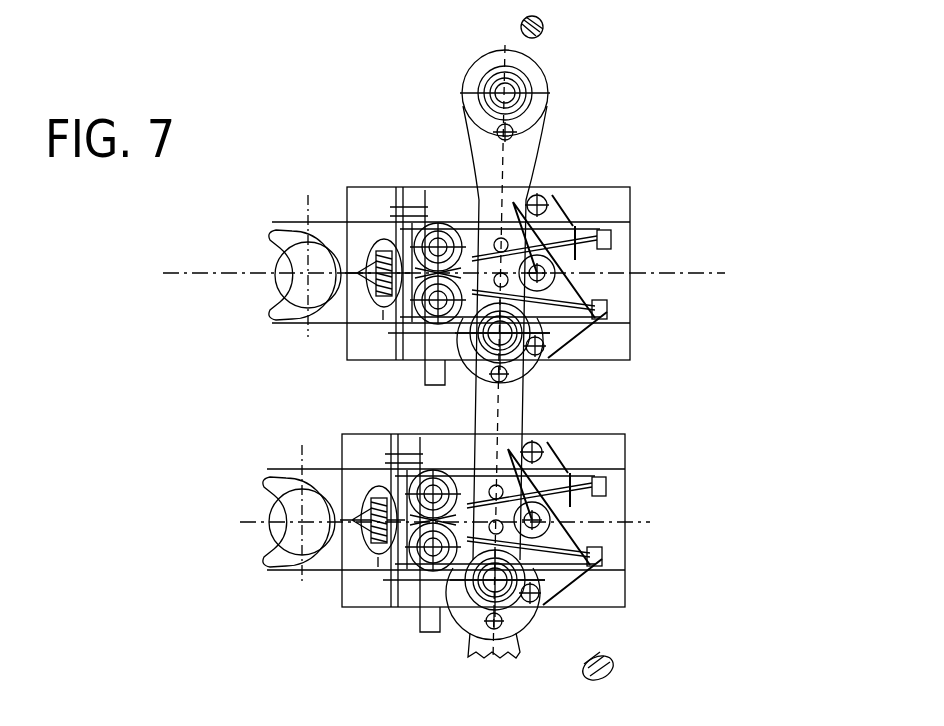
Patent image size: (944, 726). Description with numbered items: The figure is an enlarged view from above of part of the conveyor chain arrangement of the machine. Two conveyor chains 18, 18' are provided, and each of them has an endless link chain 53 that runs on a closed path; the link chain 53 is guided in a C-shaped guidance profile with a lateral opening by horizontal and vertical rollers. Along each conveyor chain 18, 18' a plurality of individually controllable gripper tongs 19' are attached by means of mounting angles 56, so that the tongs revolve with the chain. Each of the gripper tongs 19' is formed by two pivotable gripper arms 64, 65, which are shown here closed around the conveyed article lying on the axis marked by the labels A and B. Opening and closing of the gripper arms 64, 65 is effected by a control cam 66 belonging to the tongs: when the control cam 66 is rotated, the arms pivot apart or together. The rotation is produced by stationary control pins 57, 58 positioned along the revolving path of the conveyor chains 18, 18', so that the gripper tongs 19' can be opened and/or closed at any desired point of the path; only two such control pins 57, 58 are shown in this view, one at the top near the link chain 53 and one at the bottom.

The conveyor chain 18 is at (469, 311).
The conveyor chain 18' is at (429, 567).
The gripper tongs 19' is at (211, 360).
The endless link chain 53 is at (537, 76).
The mounting angle 56 is at (627, 358).
The stationary control pin 57 is at (520, 26).
The stationary control pin 58 is at (615, 665).
The gripper arm 64 is at (345, 562).
The gripper arm 65 is at (348, 500).
The control cam 66 is at (630, 291).
The axis end A is at (236, 251).
The axis end B is at (686, 250).